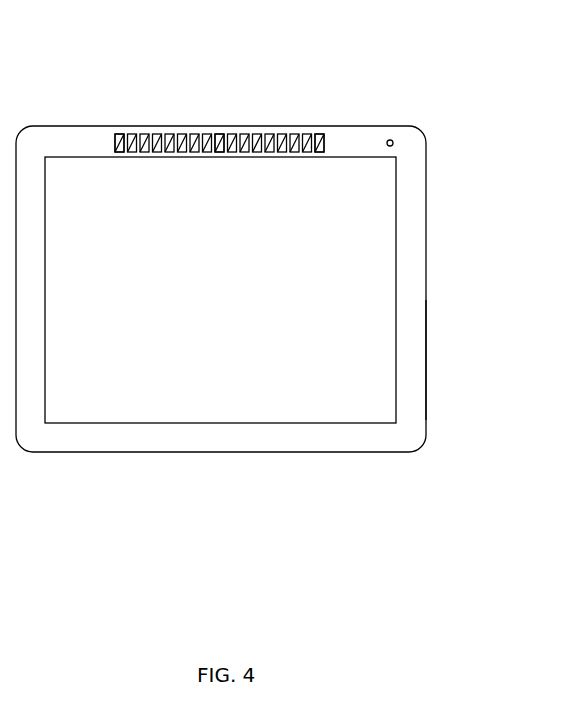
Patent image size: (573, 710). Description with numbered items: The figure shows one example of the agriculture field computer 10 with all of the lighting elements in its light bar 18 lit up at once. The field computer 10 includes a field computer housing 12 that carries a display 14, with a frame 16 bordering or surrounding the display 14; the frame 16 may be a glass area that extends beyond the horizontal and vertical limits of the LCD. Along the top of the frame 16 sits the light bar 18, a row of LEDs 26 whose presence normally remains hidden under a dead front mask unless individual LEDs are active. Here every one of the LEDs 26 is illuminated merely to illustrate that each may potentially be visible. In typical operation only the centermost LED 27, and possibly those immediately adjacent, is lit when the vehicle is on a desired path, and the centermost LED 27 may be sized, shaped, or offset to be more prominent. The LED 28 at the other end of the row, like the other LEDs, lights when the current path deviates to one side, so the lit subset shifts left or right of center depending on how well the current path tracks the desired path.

The field computer 10 is at (326, 101).
The field computer housing 12 is at (55, 122).
The display 14 is at (338, 287).
The frame 16 is at (393, 143).
The light bar 18 is at (210, 130).
The LEDs 26 is at (122, 150).
The centermost LED 27 is at (222, 150).
The key 28 is at (320, 150).